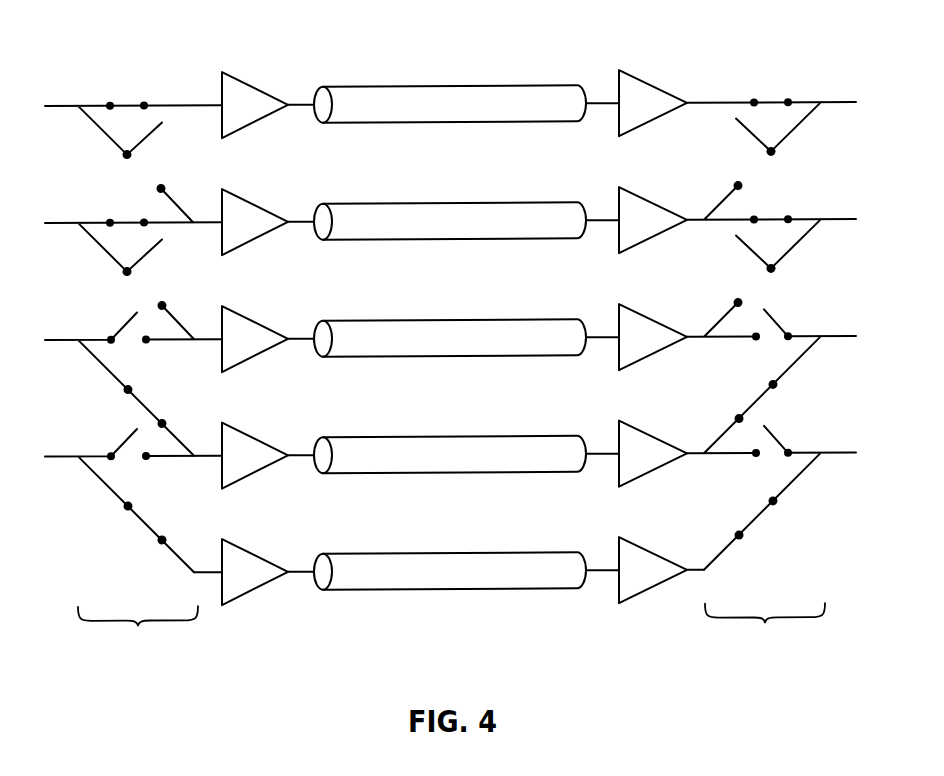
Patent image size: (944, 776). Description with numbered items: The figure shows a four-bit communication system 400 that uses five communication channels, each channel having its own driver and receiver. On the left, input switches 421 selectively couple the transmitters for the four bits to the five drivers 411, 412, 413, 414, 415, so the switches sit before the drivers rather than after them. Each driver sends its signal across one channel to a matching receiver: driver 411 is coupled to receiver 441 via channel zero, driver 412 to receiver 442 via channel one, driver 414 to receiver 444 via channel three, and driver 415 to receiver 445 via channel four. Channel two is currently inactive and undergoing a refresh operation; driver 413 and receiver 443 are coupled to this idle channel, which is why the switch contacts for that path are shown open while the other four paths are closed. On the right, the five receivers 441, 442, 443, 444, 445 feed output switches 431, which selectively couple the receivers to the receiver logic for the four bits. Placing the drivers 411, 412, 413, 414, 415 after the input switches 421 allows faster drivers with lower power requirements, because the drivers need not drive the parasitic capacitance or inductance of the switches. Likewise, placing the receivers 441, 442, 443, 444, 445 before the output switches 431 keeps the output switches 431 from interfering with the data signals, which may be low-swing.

The communication system 400 is at (592, 30).
The driver 411 is at (255, 105).
The driver 412 is at (255, 222).
The driver 413 is at (255, 339).
The driver 414 is at (255, 455).
The driver 415 is at (255, 572).
The receiver 441 is at (653, 103).
The receiver 442 is at (653, 220).
The receiver 443 is at (653, 337).
The receiver 444 is at (653, 453).
The receiver 445 is at (653, 570).
The input switches 421 is at (138, 646).
The output switches 431 is at (765, 643).